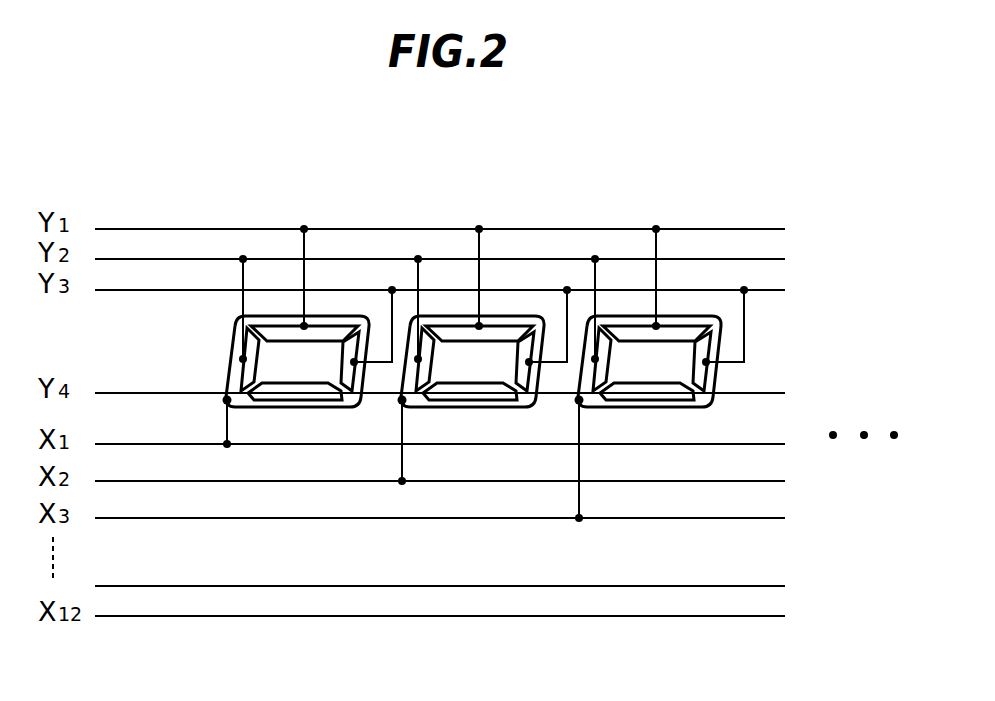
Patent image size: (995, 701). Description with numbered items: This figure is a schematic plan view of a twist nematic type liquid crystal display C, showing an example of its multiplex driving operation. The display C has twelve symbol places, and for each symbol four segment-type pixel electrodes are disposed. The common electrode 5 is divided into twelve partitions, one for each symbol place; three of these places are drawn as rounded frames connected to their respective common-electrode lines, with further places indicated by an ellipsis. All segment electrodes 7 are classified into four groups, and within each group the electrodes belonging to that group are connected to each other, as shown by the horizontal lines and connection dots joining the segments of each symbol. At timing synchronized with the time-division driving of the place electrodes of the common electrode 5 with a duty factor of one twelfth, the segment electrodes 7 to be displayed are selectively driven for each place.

The common electrode 5 is at (327, 315).
The segment electrode 7 is at (350, 372).
The liquid crystal display C is at (832, 232).